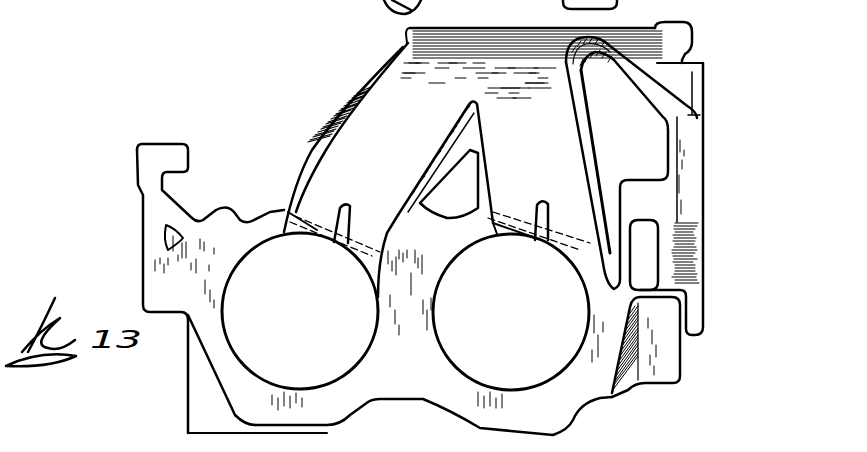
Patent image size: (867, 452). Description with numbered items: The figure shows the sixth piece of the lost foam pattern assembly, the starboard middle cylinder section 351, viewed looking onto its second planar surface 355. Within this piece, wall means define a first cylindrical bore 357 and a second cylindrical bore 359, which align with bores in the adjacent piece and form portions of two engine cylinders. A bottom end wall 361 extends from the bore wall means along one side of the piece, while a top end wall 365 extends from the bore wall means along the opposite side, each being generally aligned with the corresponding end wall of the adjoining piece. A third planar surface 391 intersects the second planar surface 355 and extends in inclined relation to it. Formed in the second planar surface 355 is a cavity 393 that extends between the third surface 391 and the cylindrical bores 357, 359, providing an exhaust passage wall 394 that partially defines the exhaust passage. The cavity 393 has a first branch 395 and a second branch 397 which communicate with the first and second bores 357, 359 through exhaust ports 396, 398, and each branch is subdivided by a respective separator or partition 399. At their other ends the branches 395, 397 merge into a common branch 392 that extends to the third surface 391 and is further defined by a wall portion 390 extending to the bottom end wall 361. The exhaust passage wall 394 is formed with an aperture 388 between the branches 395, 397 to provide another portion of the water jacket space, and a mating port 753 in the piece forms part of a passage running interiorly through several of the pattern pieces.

The starboard middle cylinder section 351 is at (716, 307).
The second planar surface 355 is at (400, 358).
The first cylindrical bore 357 is at (228, 331).
The second cylindrical bore 359 is at (577, 352).
The bottom end wall 361 is at (705, 148).
The top end wall 365 is at (143, 278).
The aperture 388 is at (455, 183).
The wall portion 390 is at (686, 63).
The third planar surface 391 is at (696, 42).
The common branch 392 is at (510, 50).
The cavity 393 is at (388, 112).
The exhaust passage wall 394 is at (408, 92).
The first branch 395 is at (353, 158).
The exhaust port 396 is at (372, 247).
The second branch 397 is at (552, 167).
The exhaust port 398 is at (590, 237).
The separator or partition 399 is at (350, 204).
The mating port 753 is at (643, 248).